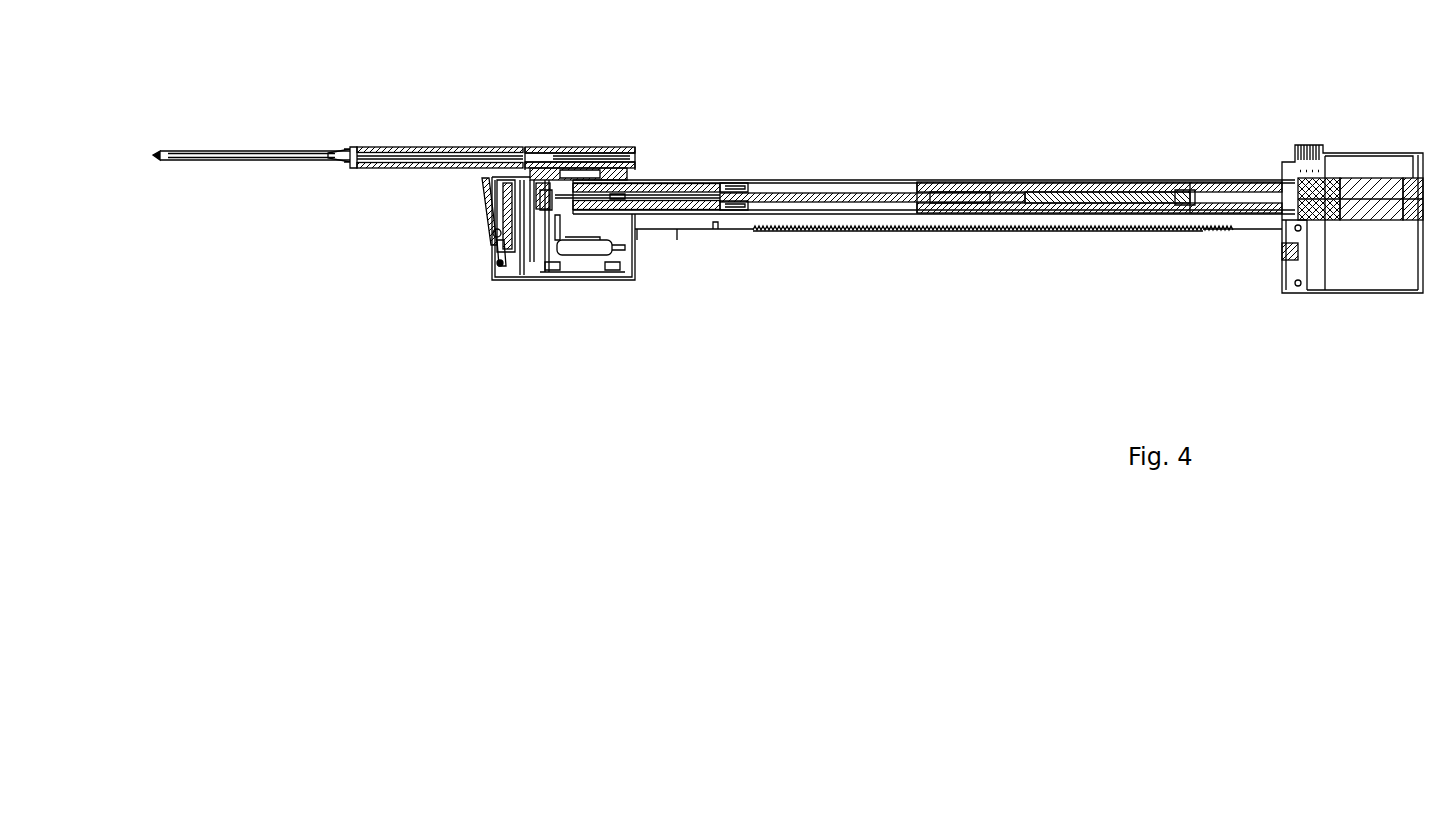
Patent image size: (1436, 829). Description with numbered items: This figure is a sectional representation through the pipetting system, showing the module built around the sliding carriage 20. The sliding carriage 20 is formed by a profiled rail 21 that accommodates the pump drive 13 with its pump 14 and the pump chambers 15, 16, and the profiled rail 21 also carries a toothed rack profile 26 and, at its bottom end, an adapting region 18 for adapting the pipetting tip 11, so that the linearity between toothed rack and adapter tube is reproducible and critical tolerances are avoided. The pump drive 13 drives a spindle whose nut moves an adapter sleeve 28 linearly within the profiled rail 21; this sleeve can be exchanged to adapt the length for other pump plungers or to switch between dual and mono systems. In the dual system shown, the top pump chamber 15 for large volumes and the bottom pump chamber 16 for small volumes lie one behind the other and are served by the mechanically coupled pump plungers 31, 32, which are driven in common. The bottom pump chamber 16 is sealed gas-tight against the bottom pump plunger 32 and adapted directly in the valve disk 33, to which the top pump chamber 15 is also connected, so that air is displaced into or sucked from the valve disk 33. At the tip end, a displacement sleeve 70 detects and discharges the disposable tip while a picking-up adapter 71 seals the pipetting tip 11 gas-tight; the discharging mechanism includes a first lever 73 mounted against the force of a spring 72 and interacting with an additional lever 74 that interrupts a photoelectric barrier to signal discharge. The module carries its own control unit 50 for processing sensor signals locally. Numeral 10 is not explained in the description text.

The needle 10 is at (274, 150).
The pipetting tip 11 is at (153, 160).
The pump drive 13 is at (1358, 168).
The pump 14 is at (1365, 220).
The top pump chamber 15 is at (875, 215).
The bottom pump chamber 16 is at (725, 183).
The adapting region 18 is at (590, 147).
The sliding carriage 20 is at (946, 165).
The profiled rail 21 is at (1088, 234).
The toothed rack profile 26 is at (978, 234).
The adapter sleeve 28 is at (1195, 182).
The top pump plunger 31 is at (1043, 182).
The bottom pump plunger 32 is at (845, 192).
The valve disk 33 is at (548, 168).
The control unit 50 is at (575, 281).
The displacement sleeve 70 is at (432, 147).
The picking-up adapter 71 is at (345, 147).
The spring 72 is at (490, 270).
The first lever 73 is at (484, 183).
The additional lever 74 is at (493, 232).